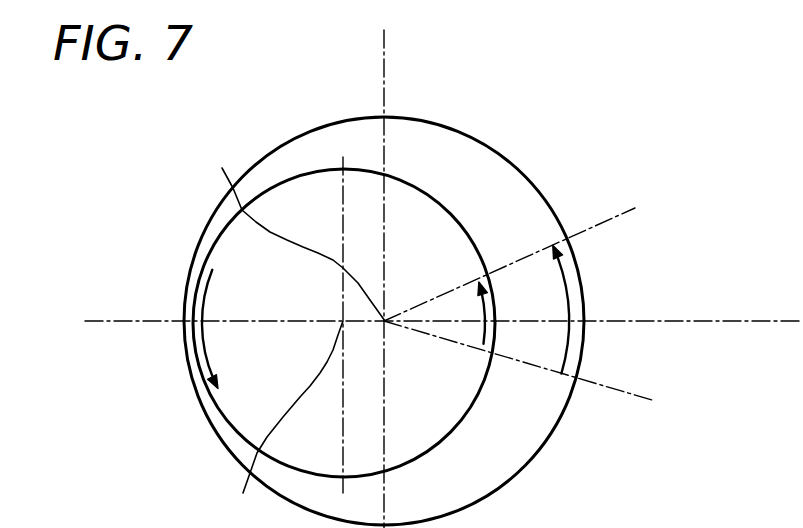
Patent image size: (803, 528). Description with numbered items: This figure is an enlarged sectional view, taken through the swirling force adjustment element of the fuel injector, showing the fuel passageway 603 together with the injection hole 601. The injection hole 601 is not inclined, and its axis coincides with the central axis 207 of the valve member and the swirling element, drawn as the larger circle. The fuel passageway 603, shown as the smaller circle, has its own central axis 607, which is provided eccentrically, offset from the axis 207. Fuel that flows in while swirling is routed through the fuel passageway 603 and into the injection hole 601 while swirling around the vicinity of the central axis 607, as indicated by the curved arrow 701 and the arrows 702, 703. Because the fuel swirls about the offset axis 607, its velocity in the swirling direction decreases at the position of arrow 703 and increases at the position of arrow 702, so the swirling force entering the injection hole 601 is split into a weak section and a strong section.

The central axis of the valve member 207 is at (291, 229).
The injection hole 601 is at (468, 237).
The fuel passageway 603 is at (560, 227).
The central axis of the fuel passageway 607 is at (283, 424).
The arrow 701 is at (568, 303).
The arrow 702 is at (200, 312).
The arrow 703 is at (483, 338).